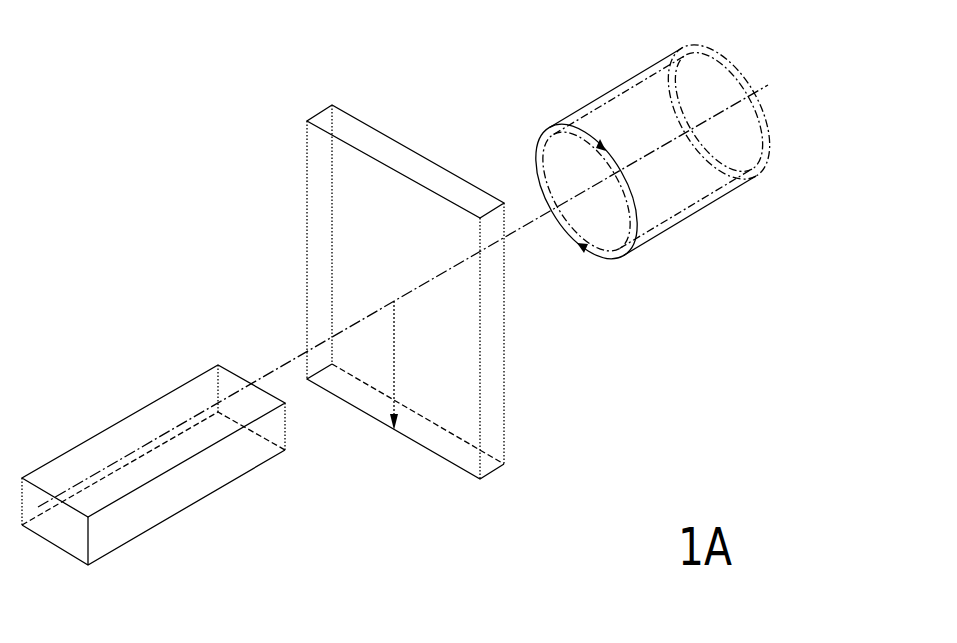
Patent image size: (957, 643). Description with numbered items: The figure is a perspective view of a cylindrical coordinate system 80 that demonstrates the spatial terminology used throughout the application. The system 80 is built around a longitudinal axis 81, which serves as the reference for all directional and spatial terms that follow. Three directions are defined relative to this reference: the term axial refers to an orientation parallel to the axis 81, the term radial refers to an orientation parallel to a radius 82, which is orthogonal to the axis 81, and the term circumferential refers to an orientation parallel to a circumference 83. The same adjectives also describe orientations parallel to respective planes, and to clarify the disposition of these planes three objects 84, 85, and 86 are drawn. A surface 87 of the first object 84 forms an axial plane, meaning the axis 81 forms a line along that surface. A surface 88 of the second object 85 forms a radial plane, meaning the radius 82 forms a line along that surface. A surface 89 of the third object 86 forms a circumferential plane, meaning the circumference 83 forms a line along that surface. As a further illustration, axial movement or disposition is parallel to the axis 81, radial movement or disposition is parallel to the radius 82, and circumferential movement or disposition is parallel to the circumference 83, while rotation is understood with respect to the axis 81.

The cylindrical coordinate system 80 is at (258, 162).
The longitudinal axis 81 is at (761, 108).
The radius 82 is at (394, 357).
The circumference 83 is at (535, 153).
The object 84 is at (115, 550).
The object 85 is at (520, 473).
The object 86 is at (684, 233).
The surface 87 is at (110, 447).
The surface 88 is at (322, 247).
The surface 89 is at (616, 90).